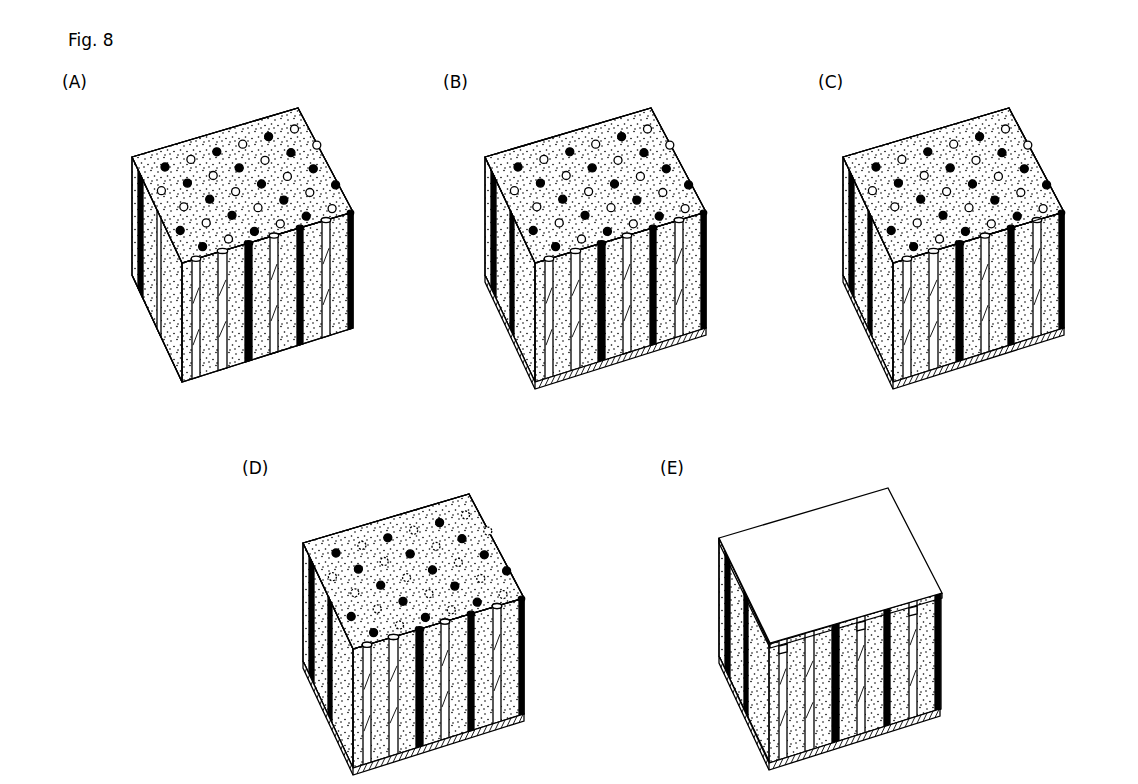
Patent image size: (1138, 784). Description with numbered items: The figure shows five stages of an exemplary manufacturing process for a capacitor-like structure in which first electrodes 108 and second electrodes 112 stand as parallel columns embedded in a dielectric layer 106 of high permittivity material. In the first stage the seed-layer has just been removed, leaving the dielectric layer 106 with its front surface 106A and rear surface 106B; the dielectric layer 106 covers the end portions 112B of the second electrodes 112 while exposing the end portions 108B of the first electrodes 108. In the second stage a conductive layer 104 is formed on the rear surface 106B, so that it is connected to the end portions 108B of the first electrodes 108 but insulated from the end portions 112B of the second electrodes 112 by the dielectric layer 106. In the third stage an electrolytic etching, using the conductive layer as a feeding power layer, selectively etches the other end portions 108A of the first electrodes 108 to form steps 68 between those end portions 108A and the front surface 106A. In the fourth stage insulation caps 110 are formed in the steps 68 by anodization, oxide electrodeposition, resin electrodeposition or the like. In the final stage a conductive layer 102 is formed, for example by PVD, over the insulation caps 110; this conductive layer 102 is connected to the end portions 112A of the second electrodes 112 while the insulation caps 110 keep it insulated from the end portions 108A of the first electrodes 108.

In FIG. 8C, the steps 68 is at (1047, 228).
In FIG. 8E, the conductive layer 102 is at (747, 537).
In FIG. 8B, the conductive layer 104 is at (538, 392).
In FIG. 8C, the conductive layer 104 is at (898, 390).
In FIG. 8D, the conductive layer 104 is at (512, 730).
In FIG. 8E, the conductive layer 104 is at (730, 700).
In FIG. 8A, the dielectric layer 106 is at (131, 224).
In FIG. 8B, the dielectric layer 106 is at (485, 224).
In FIG. 8C, the dielectric layer 106 is at (845, 193).
In FIG. 8D, the dielectric layer 106 is at (302, 600).
In FIG. 8E, the dielectric layer 106 is at (718, 598).
In FIG. 8A, the front surface of the dielectric layer 106A is at (140, 157).
In FIG. 8B, the front surface of the dielectric layer 106A is at (510, 155).
In FIG. 8C, the front surface of the dielectric layer 106A is at (870, 157).
In FIG. 8D, the front surface of the dielectric layer 106A is at (330, 540).
In FIG. 8A, the rear surface of the dielectric layer 106B is at (133, 282).
In FIG. 8A, the first electrodes 108 is at (276, 327).
In FIG. 8B, the first electrodes 108 is at (628, 330).
In FIG. 8C, the first electrodes 108 is at (1037, 270).
In FIG. 8D, the first electrodes 108 is at (500, 667).
In FIG. 8E, the first electrodes 108 is at (917, 692).
In FIG. 8A, the end portions of the first electrodes 108A is at (218, 152).
In FIG. 8B, the end portions of the first electrodes 108A is at (570, 158).
In FIG. 8C, the end portions of the first electrodes 108A is at (1037, 222).
In FIG. 8D, the end portions of the first electrodes 108A is at (500, 617).
In FIG. 8A, the end portions of the first electrodes 108B is at (276, 356).
In FIG. 8B, the end portions of the first electrodes 108B is at (630, 358).
In FIG. 8D, the insulation caps 110 is at (390, 537).
In FIG. 8E, the insulation caps 110 is at (785, 648).
In FIG. 8A, the second electrodes 112 is at (302, 256).
In FIG. 8B, the second electrodes 112 is at (653, 265).
In FIG. 8C, the second electrodes 112 is at (1014, 295).
In FIG. 8D, the second electrodes 112 is at (477, 698).
In FIG. 8E, the second electrodes 112 is at (890, 653).
In FIG. 8A, the end portions of the second electrodes 112A is at (315, 165).
In FIG. 8B, the end portions of the second electrodes 112A is at (668, 167).
In FIG. 8C, the end portions of the second electrodes 112A is at (968, 192).
In FIG. 8D, the end portions of the second electrodes 112A is at (412, 530).
In FIG. 8A, the end portions of the second electrodes 112B is at (302, 344).
In FIG. 8B, the end portions of the second electrodes 112B is at (655, 345).
In FIG. 8C, the end portions of the second electrodes 112B is at (1012, 347).
In FIG. 8D, the end portions of the second electrodes 112B is at (475, 727).